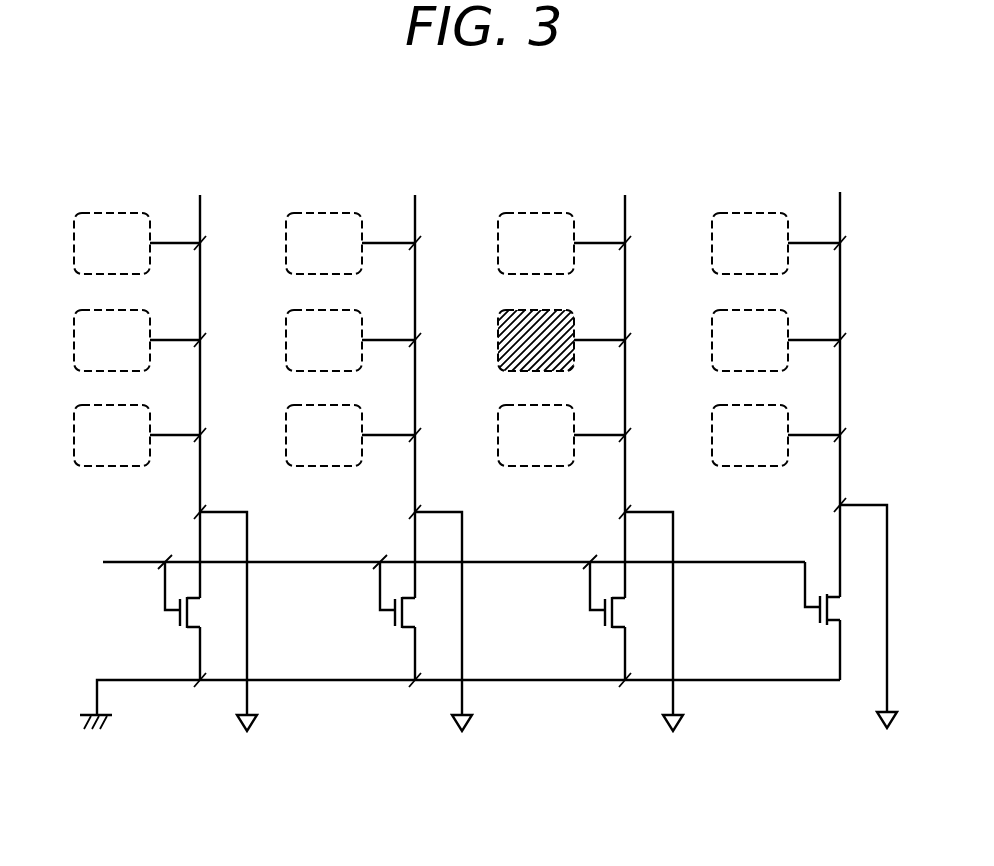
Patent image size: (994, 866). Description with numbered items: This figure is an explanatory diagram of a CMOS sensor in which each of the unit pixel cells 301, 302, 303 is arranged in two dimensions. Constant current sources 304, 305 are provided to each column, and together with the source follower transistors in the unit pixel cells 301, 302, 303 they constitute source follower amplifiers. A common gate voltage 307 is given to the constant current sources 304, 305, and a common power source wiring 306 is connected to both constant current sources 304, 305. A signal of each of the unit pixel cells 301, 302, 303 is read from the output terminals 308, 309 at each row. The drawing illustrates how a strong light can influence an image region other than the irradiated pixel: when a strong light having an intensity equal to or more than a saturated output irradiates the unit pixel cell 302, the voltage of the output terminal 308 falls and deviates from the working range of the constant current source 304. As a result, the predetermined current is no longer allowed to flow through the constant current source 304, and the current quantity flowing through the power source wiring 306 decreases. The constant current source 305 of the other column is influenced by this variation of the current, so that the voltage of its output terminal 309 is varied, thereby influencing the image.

The unit pixel cell 301 is at (118, 213).
The unit pixel cell 302 is at (542, 310).
The unit pixel cell 303 is at (118, 310).
The constant current source 304 is at (611, 630).
The constant current source 305 is at (186, 630).
The power source wiring 306 is at (180, 683).
The gate voltage 307 is at (429, 565).
The output terminal 308 is at (656, 636).
The output terminal 309 is at (551, 633).